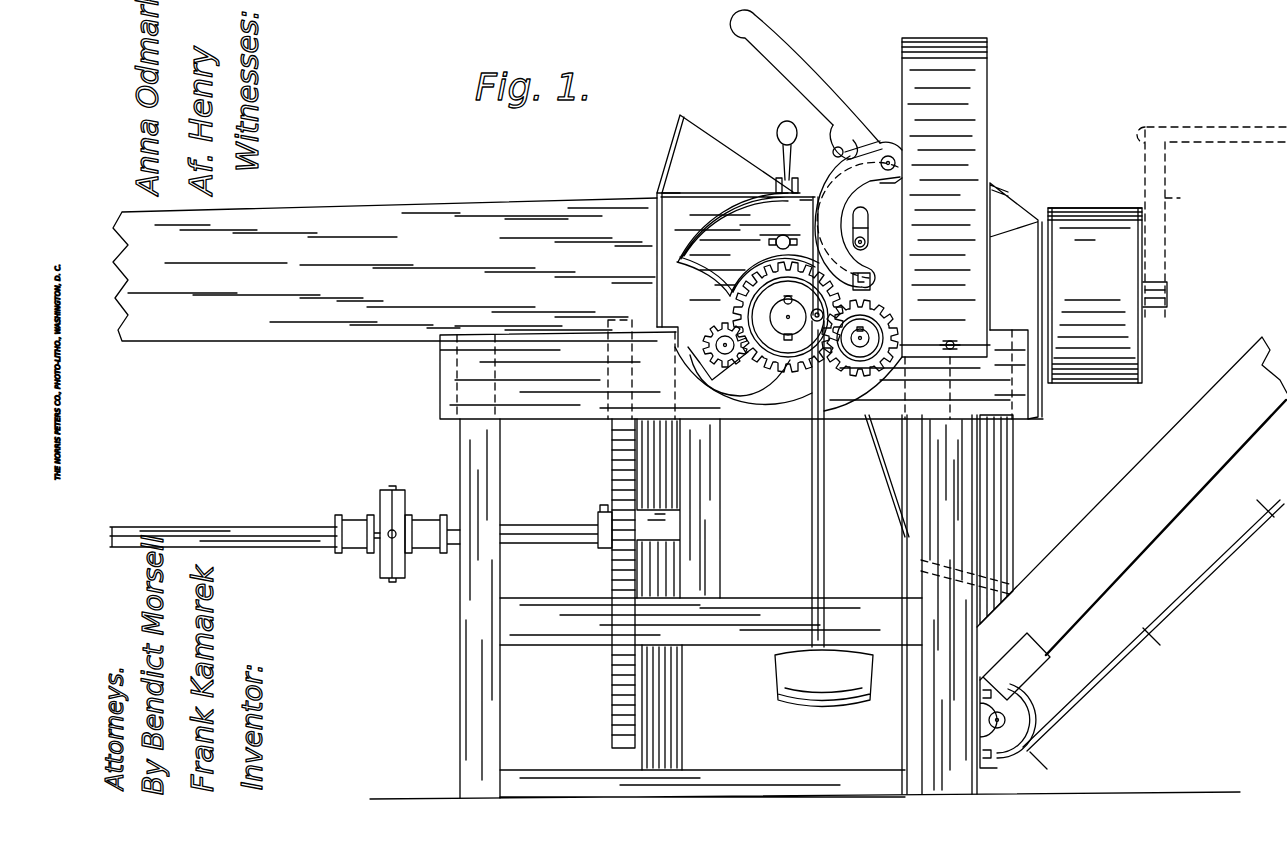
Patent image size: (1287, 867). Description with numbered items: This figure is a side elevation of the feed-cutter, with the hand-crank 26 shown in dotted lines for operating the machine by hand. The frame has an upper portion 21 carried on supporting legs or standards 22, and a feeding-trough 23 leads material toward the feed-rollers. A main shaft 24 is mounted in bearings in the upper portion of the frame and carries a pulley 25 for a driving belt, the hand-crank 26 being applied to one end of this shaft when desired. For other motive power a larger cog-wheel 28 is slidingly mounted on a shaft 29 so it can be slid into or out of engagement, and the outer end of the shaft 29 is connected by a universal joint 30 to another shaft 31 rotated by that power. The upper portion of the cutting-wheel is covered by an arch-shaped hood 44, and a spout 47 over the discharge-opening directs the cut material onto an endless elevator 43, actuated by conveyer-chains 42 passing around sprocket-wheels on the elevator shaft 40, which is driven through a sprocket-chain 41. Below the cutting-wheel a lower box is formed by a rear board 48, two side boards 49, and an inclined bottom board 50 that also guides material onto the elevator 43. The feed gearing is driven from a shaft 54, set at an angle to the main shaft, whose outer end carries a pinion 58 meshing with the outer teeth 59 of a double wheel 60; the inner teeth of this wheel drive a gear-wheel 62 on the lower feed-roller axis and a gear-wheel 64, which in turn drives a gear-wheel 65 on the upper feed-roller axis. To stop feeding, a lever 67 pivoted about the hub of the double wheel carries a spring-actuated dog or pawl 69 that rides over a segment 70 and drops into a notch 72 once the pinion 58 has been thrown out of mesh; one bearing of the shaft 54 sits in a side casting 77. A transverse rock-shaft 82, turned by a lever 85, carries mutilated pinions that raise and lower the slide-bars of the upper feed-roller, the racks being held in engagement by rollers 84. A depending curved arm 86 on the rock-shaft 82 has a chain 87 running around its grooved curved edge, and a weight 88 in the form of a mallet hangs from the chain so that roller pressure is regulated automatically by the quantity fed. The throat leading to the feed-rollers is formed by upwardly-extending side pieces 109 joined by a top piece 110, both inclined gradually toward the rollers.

The upper portion of the frame 21 is at (745, 405).
The supporting legs or standards 22 is at (493, 462).
The feeding-trough 23 is at (385, 269).
The main shaft 24 is at (1046, 302).
The pulley 25 is at (1090, 208).
The hand-crank 26 is at (1212, 222).
The cog-wheel 28 is at (612, 685).
The shaft 29 is at (552, 543).
The universal joint 30 is at (405, 572).
The shaft 31 is at (288, 541).
The elevator shaft 40 is at (999, 728).
The sprocket-chain 41 is at (890, 505).
The conveyer-chains 42 is at (1097, 670).
The endless elevator 43 is at (1132, 518).
The arch-shaped hood 44 is at (944, 197).
The spout 47 is at (1016, 301).
The rear board 48 is at (905, 553).
The side boards 49 is at (1012, 498).
The inclined bottom board 50 is at (983, 582).
The shaft 54 is at (725, 352).
The pinion 58 is at (716, 334).
The outer teeth 59 is at (744, 290).
The double wheel 60 is at (790, 350).
The gear-wheel 62 is at (856, 376).
The gear-wheel 64 is at (772, 270).
The gear-wheel 65 is at (870, 284).
The lever 67 is at (777, 136).
The spring-actuated dog or pawl 69 is at (783, 158).
The segment 70 is at (758, 195).
The notch 72 is at (720, 206).
The side casting 77 is at (806, 204).
The transverse rock-shaft 82 is at (896, 165).
The rollers 84 is at (833, 150).
The lever 85 is at (818, 92).
The curved arm 86 is at (857, 221).
The chain 87 is at (850, 226).
The weight 88 is at (824, 452).
The side pieces 109 is at (684, 243).
The top piece 110 is at (716, 137).